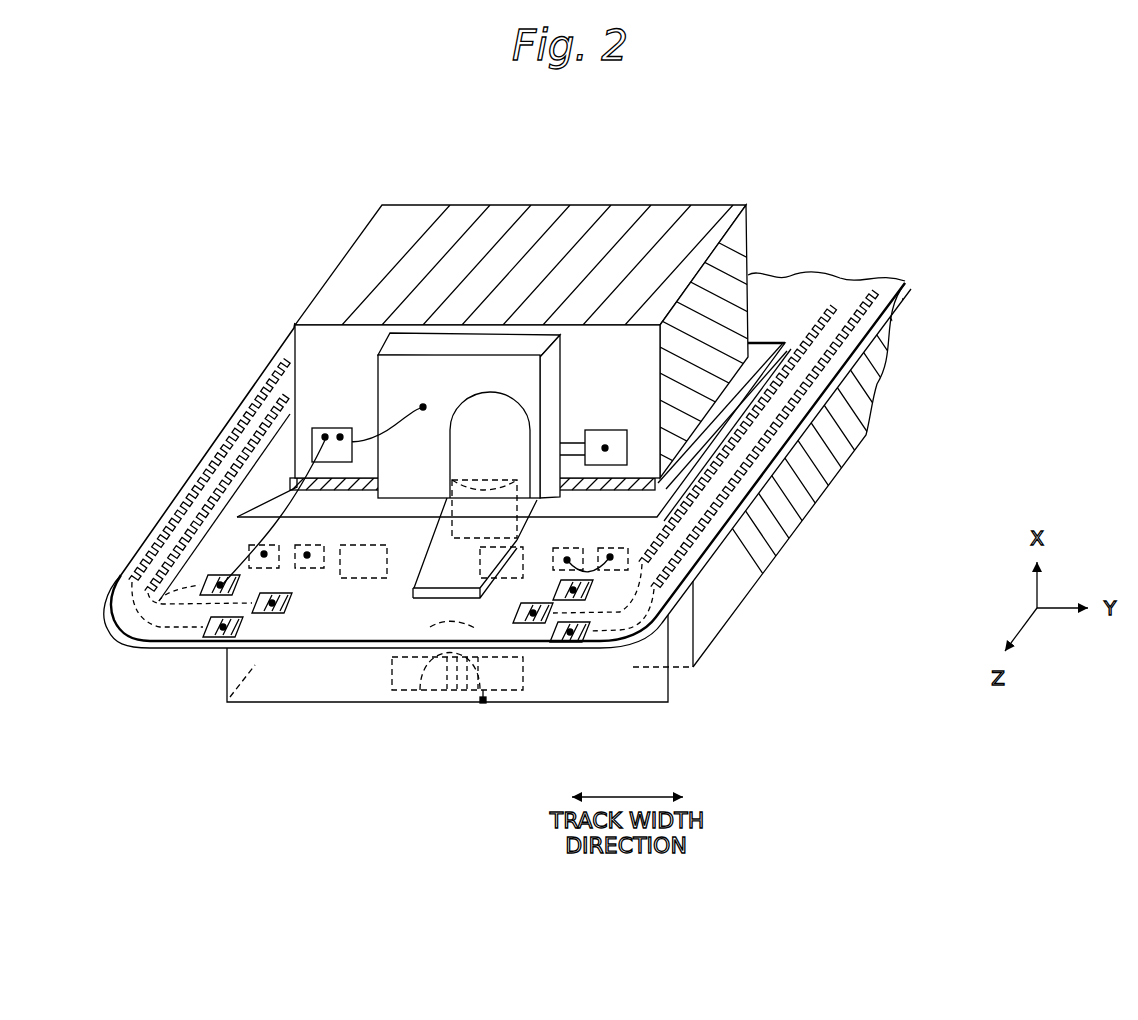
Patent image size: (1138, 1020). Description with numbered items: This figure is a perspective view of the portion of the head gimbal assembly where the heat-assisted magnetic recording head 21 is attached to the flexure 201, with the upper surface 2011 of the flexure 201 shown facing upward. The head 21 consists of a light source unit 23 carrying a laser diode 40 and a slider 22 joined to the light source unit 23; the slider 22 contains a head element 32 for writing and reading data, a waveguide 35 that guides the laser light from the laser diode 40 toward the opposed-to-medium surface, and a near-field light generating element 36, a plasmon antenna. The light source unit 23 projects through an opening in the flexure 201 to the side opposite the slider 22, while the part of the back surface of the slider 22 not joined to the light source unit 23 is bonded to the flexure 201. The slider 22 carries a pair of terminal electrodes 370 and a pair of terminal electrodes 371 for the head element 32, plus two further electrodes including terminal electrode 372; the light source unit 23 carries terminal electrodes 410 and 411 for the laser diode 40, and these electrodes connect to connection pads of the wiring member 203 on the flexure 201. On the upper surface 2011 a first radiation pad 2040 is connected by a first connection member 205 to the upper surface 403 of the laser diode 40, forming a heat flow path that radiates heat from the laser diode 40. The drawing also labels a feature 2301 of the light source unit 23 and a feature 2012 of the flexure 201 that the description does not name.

The heat-assisted magnetic recording head 21 is at (668, 163).
The slider 22 is at (835, 492).
The light source unit 23 is at (728, 198).
The top surface of head part 2301 is at (502, 230).
The laser diode 40 is at (446, 353).
The upper surface of the laser diode 403 is at (405, 378).
The terminal electrode 410 is at (605, 447).
The terminal electrode 411 is at (331, 428).
The flexure 201 is at (912, 284).
The upper surface 2011 is at (217, 552).
The element formation surface 2012 is at (731, 403).
The wiring member 203 is at (232, 452).
The first radiation pad 2040 is at (443, 523).
The first connection member 205 is at (413, 590).
The waveguide 35 is at (405, 690).
The near-field light generating element 36 is at (480, 678).
The head element 32 is at (483, 703).
The terminal electrodes 370 is at (307, 557).
The terminal electrodes 371 is at (610, 558).
The terminal electrode 372 is at (508, 580).